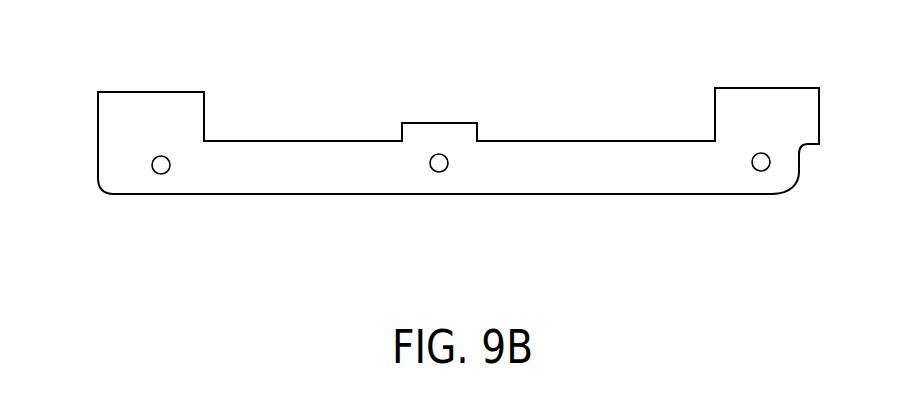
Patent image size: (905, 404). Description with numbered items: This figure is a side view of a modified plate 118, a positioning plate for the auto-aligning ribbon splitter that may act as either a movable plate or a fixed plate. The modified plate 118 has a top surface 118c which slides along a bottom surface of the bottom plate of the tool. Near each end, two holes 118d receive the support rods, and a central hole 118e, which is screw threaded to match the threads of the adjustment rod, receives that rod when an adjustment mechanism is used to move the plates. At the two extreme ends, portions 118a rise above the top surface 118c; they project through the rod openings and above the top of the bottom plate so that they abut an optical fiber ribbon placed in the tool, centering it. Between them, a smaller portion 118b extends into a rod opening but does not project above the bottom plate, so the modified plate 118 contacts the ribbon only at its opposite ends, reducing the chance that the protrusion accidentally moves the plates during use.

The modified plate 118 is at (326, 216).
The portions 118a is at (125, 118).
The portion 118b is at (438, 132).
The top surface 118c is at (612, 138).
The holes 118d is at (161, 175).
The hole 118e is at (439, 172).